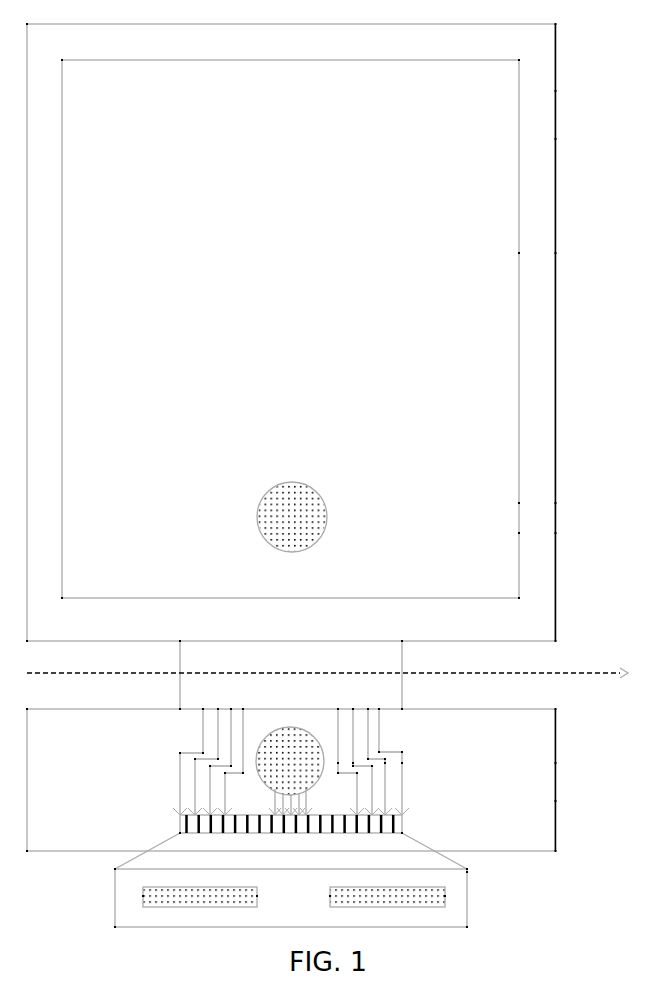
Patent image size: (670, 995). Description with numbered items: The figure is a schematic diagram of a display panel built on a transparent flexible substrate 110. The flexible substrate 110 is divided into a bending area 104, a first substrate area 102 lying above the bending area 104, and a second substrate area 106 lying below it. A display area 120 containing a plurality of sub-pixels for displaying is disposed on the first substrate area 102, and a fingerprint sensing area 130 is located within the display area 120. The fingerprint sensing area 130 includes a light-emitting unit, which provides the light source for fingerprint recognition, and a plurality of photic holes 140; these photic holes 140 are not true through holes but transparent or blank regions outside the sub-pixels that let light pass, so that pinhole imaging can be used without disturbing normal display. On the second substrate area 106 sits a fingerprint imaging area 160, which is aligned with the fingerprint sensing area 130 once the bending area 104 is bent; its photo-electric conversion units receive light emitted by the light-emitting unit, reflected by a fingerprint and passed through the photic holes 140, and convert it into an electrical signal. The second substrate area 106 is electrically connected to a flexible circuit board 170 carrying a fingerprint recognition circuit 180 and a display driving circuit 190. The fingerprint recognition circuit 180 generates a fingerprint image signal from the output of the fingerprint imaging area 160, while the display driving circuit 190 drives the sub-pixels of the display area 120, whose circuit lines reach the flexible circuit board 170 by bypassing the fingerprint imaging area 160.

The flexible substrate 110 is at (326, 332).
The first substrate area 102 is at (535, 139).
The display area 120 is at (483, 253).
The fingerprint sensing area 130 is at (327, 503).
The photic hole 140 is at (308, 533).
The bending area 104 is at (402, 657).
The second substrate area 106 is at (535, 801).
The fingerprint imaging area 160 is at (290, 763).
The flexible circuit board 170 is at (448, 872).
The fingerprint recognition circuit 180 is at (445, 896).
The display driving circuit 190 is at (143, 896).